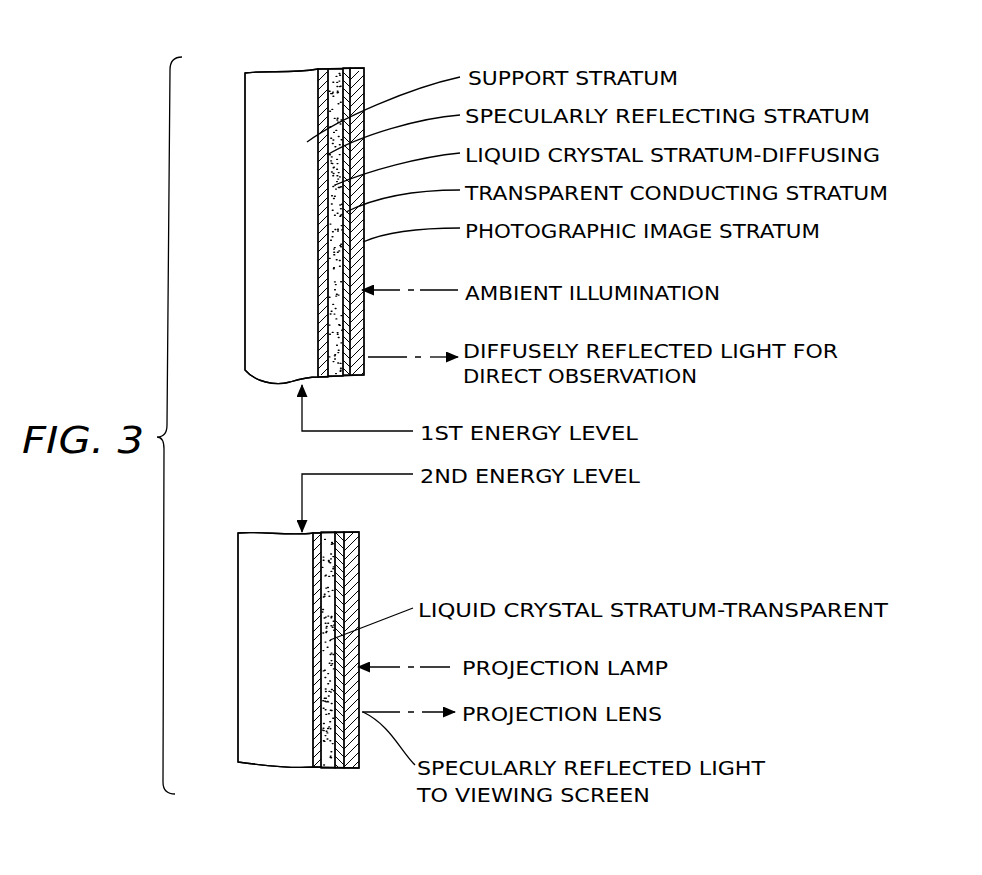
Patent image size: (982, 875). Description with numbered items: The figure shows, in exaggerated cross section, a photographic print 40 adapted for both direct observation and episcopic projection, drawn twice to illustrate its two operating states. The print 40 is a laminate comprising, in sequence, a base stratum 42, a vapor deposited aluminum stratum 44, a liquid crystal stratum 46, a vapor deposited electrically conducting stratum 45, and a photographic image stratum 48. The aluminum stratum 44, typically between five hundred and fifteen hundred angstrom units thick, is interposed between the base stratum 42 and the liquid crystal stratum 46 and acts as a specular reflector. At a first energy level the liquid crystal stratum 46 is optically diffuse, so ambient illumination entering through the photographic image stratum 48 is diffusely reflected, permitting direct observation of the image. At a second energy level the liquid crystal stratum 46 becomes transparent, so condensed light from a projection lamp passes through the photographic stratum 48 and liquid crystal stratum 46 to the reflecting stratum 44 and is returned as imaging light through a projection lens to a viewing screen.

The photographic print 40 is at (245, 172).
The base stratum 42 is at (283, 71).
The vapor deposited aluminum stratum 44 is at (324, 68).
The liquid crystal stratum 46 is at (336, 68).
The vapor deposited electrically conducting stratum 45 is at (346, 68).
The photographic image stratum 48 is at (365, 78).